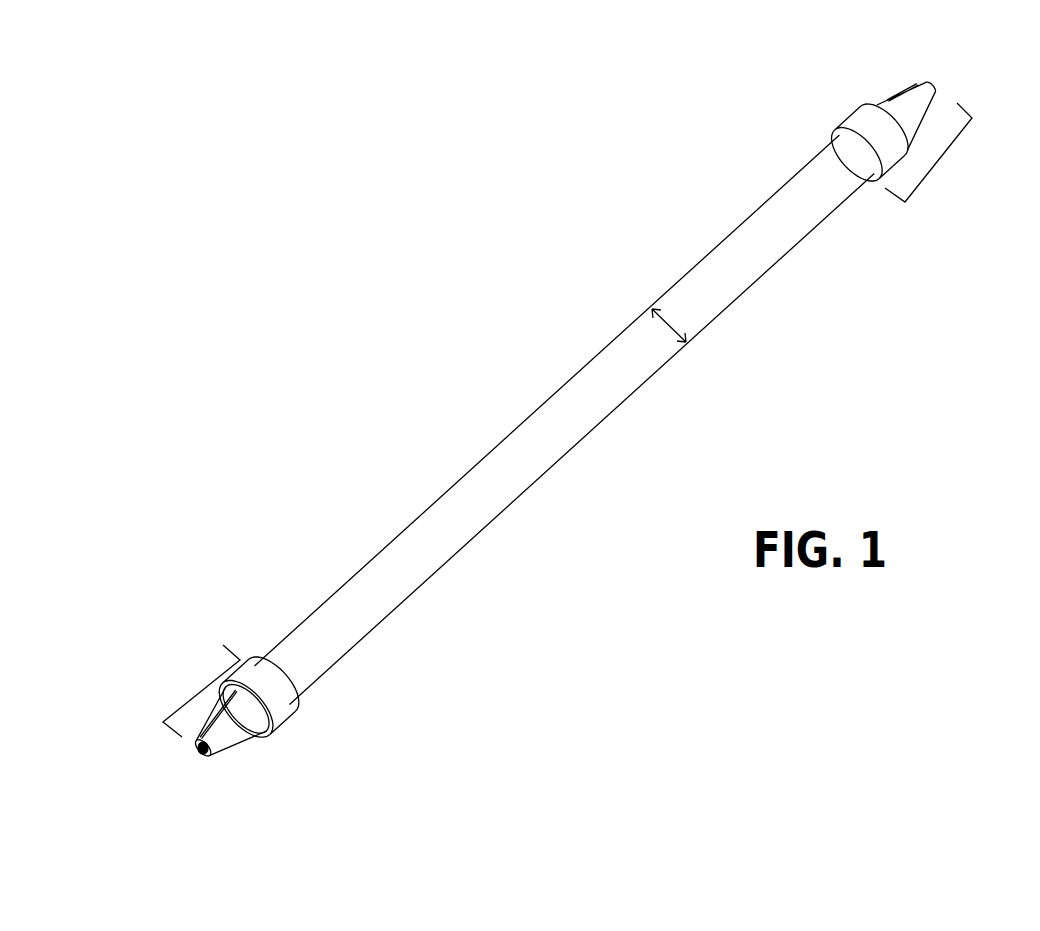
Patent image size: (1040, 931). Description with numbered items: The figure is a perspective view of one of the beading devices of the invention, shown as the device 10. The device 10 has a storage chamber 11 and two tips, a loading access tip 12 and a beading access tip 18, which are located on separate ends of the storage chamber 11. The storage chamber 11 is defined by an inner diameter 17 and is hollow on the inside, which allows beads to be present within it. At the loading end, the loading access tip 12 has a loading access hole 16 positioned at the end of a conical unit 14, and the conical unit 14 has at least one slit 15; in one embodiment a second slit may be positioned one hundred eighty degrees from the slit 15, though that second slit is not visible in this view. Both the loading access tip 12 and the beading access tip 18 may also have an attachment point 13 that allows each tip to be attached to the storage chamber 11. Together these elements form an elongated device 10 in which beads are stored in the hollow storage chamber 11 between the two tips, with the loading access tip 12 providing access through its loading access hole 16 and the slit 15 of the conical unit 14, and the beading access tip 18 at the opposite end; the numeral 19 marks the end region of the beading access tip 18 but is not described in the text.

The fluid tube assembly 10 is at (908, 383).
The tube body 11 is at (560, 413).
The first end connector 12 is at (193, 685).
The coupling nut 13 is at (278, 700).
The ferrule 14 is at (248, 725).
The tapered nozzle 15 is at (217, 726).
The tip orifice 16 is at (215, 763).
The tube outer diameter 17 is at (668, 313).
The second end connector 18 is at (937, 162).
The second end tip 19 is at (930, 83).